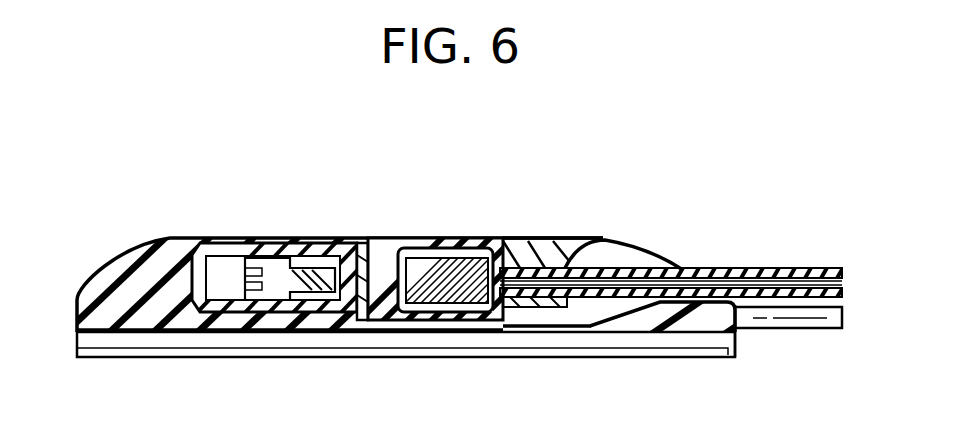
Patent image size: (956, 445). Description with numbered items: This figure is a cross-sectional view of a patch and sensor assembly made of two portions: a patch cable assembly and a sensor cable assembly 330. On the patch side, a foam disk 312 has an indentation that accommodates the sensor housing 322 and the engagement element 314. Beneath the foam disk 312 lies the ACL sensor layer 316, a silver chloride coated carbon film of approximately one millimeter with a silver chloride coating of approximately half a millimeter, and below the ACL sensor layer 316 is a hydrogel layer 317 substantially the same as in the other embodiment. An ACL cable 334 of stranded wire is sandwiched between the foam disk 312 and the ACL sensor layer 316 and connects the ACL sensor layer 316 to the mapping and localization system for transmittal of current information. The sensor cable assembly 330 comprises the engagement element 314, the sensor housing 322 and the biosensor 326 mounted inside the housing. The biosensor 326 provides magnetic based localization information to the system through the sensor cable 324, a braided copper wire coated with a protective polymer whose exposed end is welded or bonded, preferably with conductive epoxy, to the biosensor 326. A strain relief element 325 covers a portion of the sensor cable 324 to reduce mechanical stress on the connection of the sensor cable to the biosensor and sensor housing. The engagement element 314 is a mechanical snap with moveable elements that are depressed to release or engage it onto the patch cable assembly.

The sensor cable assembly 330 is at (335, 213).
The foam disk 312 is at (82, 323).
The engagement element 314 is at (218, 247).
The ACL sensor layer 316 is at (738, 345).
The hydrogel layer 317 is at (732, 357).
The sensor housing 322 is at (512, 243).
The sensor cable 324 is at (832, 278).
The strain relief element 325 is at (606, 244).
The biosensor 326 is at (420, 258).
The ACL cable 334 is at (826, 328).